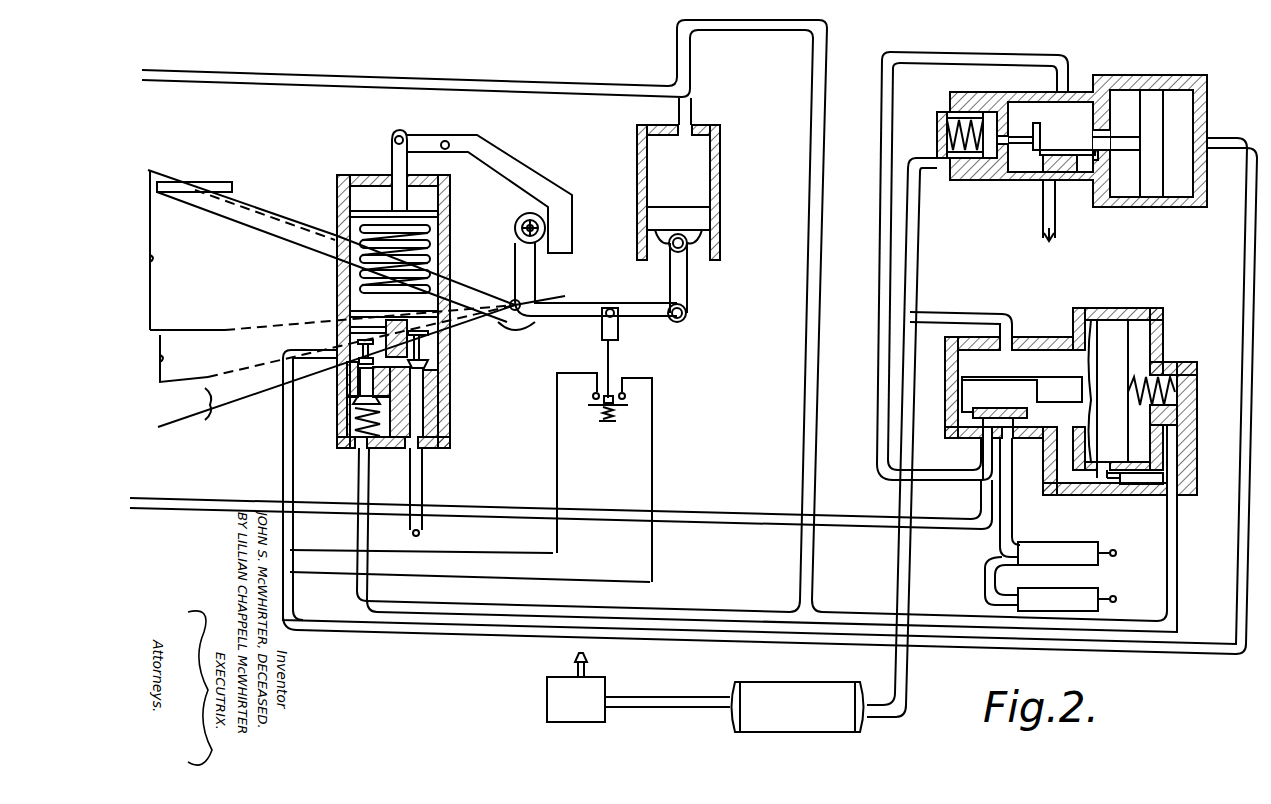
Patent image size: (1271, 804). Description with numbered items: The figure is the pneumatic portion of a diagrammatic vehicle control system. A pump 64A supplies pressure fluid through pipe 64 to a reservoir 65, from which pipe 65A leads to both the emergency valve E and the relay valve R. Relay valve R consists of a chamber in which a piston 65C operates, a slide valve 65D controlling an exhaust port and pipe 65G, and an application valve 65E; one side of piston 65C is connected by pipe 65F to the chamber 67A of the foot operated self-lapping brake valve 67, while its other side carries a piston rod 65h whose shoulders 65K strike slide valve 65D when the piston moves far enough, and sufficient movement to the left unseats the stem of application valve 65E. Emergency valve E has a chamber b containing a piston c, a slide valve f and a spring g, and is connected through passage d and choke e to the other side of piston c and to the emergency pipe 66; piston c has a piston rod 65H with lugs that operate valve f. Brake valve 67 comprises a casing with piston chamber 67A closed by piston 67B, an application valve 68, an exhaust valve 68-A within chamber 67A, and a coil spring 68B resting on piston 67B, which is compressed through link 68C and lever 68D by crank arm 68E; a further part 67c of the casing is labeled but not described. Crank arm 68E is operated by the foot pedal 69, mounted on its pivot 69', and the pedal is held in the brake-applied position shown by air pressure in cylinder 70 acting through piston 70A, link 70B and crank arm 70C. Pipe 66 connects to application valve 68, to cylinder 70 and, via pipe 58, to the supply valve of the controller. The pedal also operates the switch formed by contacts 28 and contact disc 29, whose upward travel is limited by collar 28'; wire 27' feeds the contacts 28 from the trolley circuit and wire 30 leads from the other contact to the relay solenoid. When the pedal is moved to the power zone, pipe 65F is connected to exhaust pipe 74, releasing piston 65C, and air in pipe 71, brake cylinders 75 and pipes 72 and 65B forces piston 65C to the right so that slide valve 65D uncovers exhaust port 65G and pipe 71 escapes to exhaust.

The pipe 58 is at (262, 82).
The foot pedal 69 is at (323, 298).
The shaft 69' is at (530, 325).
The foot operated self-lapping brake valve 67 is at (430, 356).
The piston chamber 67A is at (352, 329).
The piston 67B is at (355, 312).
The valve 67c is at (347, 350).
The application valve 68 is at (346, 394).
The exhaust valve 68-A is at (437, 371).
The coil spring 68B is at (430, 243).
The link 68C is at (395, 170).
The lever 68D is at (478, 152).
The crank arm 68E is at (535, 283).
The cylinder 70 is at (720, 173).
The piston 70A is at (710, 214).
The link 70B is at (687, 293).
The crank arm 70C is at (640, 320).
The contacts 28 is at (578, 463).
The collar 28' is at (620, 461).
The contact disc 29 is at (614, 417).
The wire 27' is at (421, 538).
The wire 30 is at (334, 578).
The pipe 71 is at (174, 506).
The exhaust pipe 74 is at (408, 522).
The emergency pipe 66 is at (357, 472).
The pipe 65F is at (273, 462).
The pipe 65A is at (913, 291).
The pipe 65B is at (883, 104).
The relay valve R is at (1180, 72).
The application valve 65E is at (985, 174).
The shoulders 65K is at (1090, 152).
The slide valve 65D is at (1075, 174).
The piston rod 65h is at (1120, 137).
The piston 65C is at (1162, 116).
The exhaust port and pipe 65G is at (1051, 240).
The emergency valve E is at (1152, 307).
The chamber b is at (1032, 350).
The piston c is at (1109, 391).
The slide valve f is at (1005, 406).
The piston rod 65H is at (1071, 373).
The spring g is at (1176, 384).
The passage d is at (1056, 476).
The choke e is at (1104, 480).
The pipes 72 is at (985, 570).
The brake cylinders 75 is at (1067, 576).
The pump 64A is at (547, 705).
The pipe 64 is at (664, 707).
The reservoir 65 is at (835, 445).